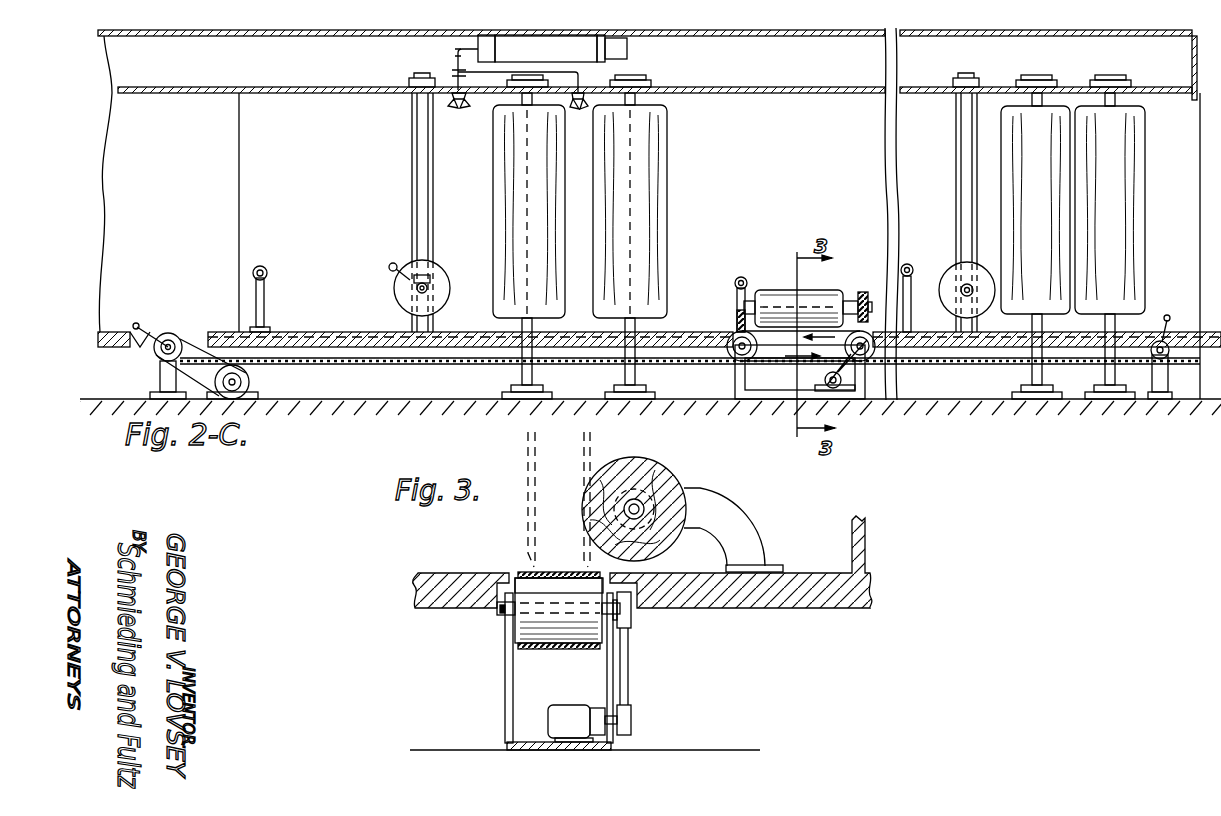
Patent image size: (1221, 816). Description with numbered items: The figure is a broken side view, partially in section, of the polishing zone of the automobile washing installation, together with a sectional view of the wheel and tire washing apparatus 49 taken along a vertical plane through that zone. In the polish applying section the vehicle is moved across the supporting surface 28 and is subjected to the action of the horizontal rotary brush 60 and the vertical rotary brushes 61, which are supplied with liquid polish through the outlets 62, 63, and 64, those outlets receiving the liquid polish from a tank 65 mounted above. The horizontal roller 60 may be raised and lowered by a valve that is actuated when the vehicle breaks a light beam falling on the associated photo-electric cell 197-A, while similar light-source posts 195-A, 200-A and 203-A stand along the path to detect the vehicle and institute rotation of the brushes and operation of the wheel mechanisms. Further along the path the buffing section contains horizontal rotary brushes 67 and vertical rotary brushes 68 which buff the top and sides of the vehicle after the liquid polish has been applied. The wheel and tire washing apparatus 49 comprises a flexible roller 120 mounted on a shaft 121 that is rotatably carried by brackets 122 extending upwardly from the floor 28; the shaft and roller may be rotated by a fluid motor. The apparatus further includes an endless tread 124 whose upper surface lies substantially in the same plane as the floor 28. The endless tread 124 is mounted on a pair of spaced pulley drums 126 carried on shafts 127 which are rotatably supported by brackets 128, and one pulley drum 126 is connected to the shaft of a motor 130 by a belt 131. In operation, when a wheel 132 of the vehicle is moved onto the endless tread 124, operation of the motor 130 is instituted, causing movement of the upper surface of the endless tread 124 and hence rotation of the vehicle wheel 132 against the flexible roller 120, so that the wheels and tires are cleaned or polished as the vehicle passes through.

In FIG. 3, the supporting surface 28 is at (800, 571).
In FIG. 2C, the wheel and tire washing apparatus 49 is at (766, 283).
In FIG. 3, the wheel and tire washing apparatus 49 is at (718, 495).
In FIG. 2C, the horizontal rotary brush 60 is at (415, 262).
In FIG. 2C, the vertical rotary brushes 61 is at (505, 180).
In FIG. 2C, the outlet 62 is at (455, 101).
In FIG. 2C, the outlet 63 is at (463, 108).
In FIG. 2C, the outlet 64 is at (580, 101).
In FIG. 2C, the tank 65 is at (618, 46).
In FIG. 2C, the horizontal rotary brushes 67 is at (959, 268).
In FIG. 2C, the vertical rotary brushes 68 is at (1108, 166).
In FIG. 3, the flexible roller 120 is at (619, 464).
In FIG. 3, the shaft 121 is at (646, 505).
In FIG. 3, the brackets 122 is at (728, 530).
In FIG. 2C, the endless tread 124 is at (790, 362).
In FIG. 3, the endless tread 124 is at (535, 571).
In FIG. 3, the pulley drums 126 is at (528, 628).
In FIG. 3, the shafts 127 is at (500, 612).
In FIG. 3, the brackets 128 is at (508, 676).
In FIG. 3, the motor 130 is at (577, 706).
In FIG. 3, the belt 131 is at (630, 655).
In FIG. 3, the wheel 132 is at (545, 447).
In FIG. 2C, the post 195-A is at (262, 266).
In FIG. 2C, the photo-electric cell 197-A is at (390, 268).
In FIG. 2C, the post 200-A is at (741, 277).
In FIG. 2C, the post 203-A is at (908, 263).